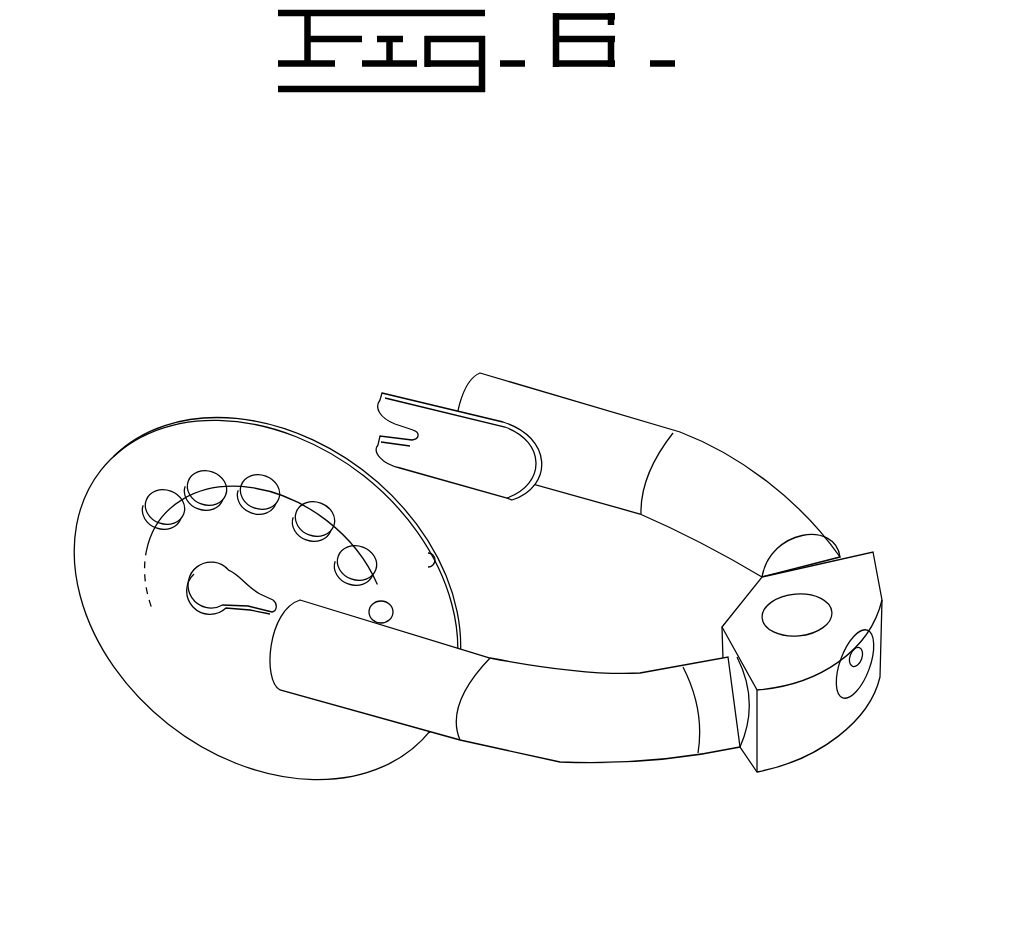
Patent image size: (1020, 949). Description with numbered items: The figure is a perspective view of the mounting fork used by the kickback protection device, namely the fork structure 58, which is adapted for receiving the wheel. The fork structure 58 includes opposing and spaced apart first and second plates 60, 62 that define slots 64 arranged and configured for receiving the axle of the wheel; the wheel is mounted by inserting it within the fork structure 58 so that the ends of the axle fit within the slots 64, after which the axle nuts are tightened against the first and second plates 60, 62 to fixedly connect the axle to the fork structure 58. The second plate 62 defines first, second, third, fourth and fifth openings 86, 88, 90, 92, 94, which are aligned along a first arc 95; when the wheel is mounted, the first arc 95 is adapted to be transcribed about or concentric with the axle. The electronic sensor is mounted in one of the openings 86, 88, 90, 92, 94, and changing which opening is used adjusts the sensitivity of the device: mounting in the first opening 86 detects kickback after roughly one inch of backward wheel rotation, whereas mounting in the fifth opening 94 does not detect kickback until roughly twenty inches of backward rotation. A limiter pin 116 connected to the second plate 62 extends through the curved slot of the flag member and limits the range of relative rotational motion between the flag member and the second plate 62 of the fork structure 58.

The fork structure 58 is at (486, 777).
The first plate 60 is at (503, 480).
The second plate 62 is at (217, 750).
The slots 64 is at (242, 608).
The first opening 86 is at (376, 548).
The second opening 88 is at (313, 498).
The third opening 90 is at (253, 476).
The fourth opening 92 is at (188, 474).
The fifth opening 94 is at (146, 494).
The first arc 95 is at (142, 582).
The limiter pin 116 is at (440, 560).